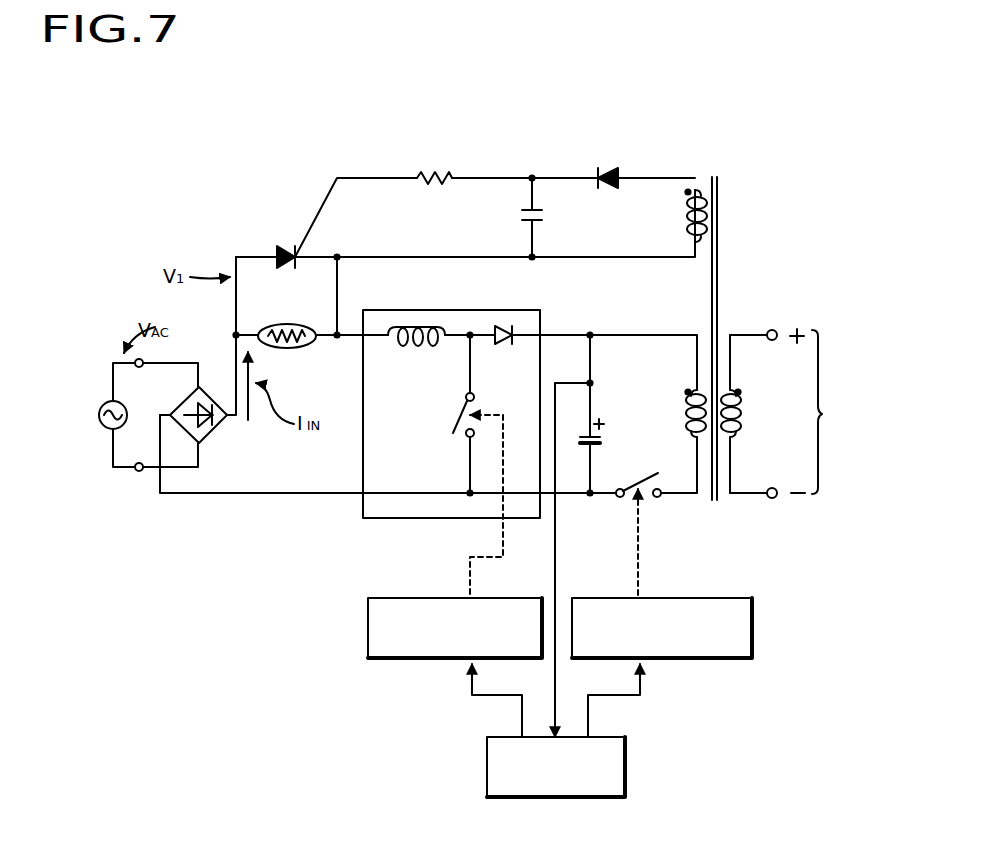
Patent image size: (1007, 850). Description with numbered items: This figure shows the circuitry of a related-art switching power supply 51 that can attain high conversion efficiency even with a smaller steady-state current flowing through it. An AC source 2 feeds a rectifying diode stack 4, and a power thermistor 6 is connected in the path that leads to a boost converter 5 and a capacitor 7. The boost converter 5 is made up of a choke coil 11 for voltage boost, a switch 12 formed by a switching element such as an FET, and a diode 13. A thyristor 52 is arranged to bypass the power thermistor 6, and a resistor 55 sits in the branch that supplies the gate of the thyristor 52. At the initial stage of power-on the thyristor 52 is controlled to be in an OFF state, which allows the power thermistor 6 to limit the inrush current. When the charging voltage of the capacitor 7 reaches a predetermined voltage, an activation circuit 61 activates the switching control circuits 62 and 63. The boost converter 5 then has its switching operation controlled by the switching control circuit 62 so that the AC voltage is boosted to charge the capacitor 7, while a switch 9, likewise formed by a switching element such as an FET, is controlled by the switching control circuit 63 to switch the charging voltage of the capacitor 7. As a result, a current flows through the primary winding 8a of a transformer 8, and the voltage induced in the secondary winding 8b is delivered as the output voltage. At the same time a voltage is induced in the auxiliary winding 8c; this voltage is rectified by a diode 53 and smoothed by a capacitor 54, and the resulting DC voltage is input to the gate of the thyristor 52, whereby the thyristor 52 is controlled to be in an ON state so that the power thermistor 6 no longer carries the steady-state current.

The AC power source 2 is at (101, 402).
The rectifying diode stack 4 is at (212, 428).
The boost converter 5 is at (478, 310).
The power thermistor 6 is at (290, 351).
The capacitor 7 is at (582, 446).
The transformer 8 is at (728, 303).
The primary winding 8a is at (685, 416).
The secondary winding 8b is at (745, 416).
The auxiliary winding 8c is at (683, 220).
The switch 9 is at (643, 482).
The choke coil 11 is at (415, 347).
The switch 12 is at (455, 422).
The diode 13 is at (503, 347).
The power supply 51 is at (273, 161).
The thyristor 52 is at (288, 268).
The diode 53 is at (603, 170).
The capacitor 54 is at (527, 224).
The resistor 55 is at (423, 171).
The activation circuit 61 is at (625, 767).
The switching control circuit 62 is at (428, 598).
The switching control circuit 63 is at (678, 598).